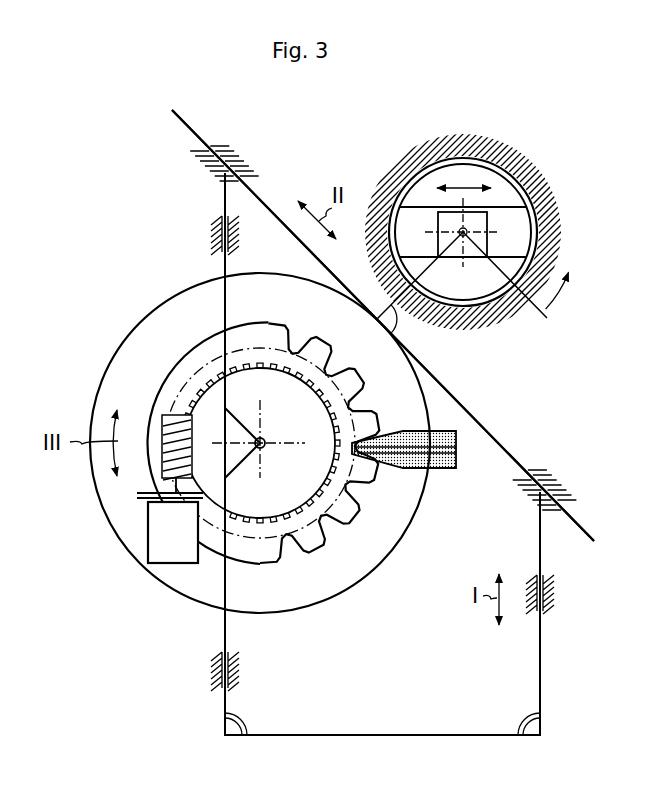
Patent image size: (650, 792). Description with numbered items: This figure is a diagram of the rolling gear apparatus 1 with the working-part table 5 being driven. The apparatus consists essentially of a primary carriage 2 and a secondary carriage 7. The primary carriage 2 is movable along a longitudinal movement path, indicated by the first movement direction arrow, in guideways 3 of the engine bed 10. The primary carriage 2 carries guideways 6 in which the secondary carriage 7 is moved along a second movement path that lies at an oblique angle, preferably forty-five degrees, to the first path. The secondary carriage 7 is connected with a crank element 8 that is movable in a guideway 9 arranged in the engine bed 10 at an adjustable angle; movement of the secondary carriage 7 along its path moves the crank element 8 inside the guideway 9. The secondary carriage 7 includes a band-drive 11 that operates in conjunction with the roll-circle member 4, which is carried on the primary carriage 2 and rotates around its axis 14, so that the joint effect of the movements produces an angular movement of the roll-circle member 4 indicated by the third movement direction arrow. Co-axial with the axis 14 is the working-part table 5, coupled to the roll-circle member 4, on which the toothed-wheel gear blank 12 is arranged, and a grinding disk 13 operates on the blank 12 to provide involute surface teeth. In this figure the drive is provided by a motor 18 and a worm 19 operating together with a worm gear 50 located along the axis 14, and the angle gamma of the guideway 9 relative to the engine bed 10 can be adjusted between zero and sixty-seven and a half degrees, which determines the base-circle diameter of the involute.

The rolling gear apparatus 1 is at (520, 409).
The primary carriage 2 is at (372, 737).
The guideways 3 is at (208, 237).
The roll-circle member 4 is at (256, 443).
The working-part table 5 is at (146, 318).
The guideways 6 is at (236, 162).
The secondary carriage 7 is at (185, 122).
The crank element 8 is at (480, 239).
The guideway 9 is at (505, 191).
The engine bed 10 is at (411, 165).
The band-drive 11 is at (449, 393).
The toothed-wheel gear blank 12 is at (345, 524).
The grinding disk 13 is at (436, 470).
The axis 14 is at (265, 440).
The motor 18 is at (158, 541).
The worm 19 is at (165, 428).
The worm gear 50 is at (253, 364).